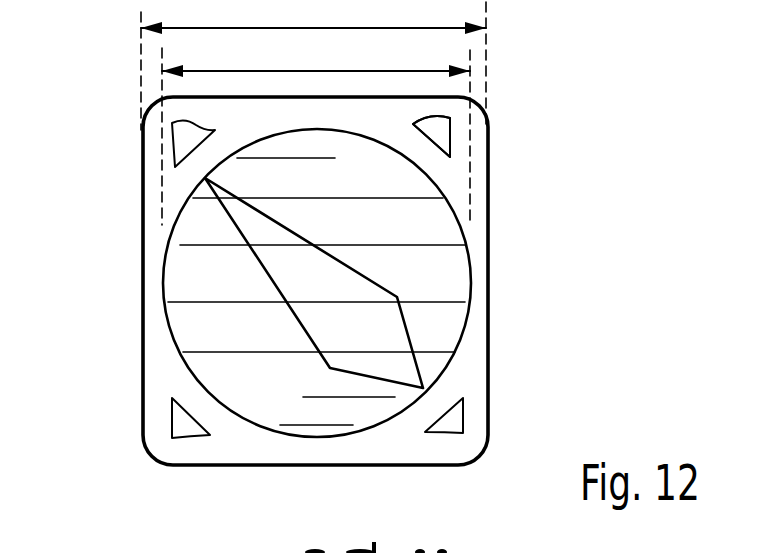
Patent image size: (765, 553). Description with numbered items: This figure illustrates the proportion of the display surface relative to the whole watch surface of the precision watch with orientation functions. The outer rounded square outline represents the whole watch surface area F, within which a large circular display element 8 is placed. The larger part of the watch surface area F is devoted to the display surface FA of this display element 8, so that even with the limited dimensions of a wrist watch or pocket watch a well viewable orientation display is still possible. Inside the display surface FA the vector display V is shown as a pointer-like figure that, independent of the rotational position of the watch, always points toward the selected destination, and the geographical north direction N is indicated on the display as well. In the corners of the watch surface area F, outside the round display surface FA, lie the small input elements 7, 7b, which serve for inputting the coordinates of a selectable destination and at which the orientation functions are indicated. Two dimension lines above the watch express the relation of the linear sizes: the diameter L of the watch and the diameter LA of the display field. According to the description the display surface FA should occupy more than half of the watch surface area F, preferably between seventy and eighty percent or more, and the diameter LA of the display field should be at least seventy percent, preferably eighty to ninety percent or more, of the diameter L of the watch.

The watch surface area F is at (136, 387).
The display element 8 is at (160, 283).
The input element 7 is at (437, 137).
The input element for orientation functions 7b is at (431, 136).
The vector display V is at (375, 298).
The geographical north direction N is at (374, 162).
The display surface FA is at (257, 389).
The diameter of the watch L is at (298, 28).
The diameter of the display field LA is at (286, 68).